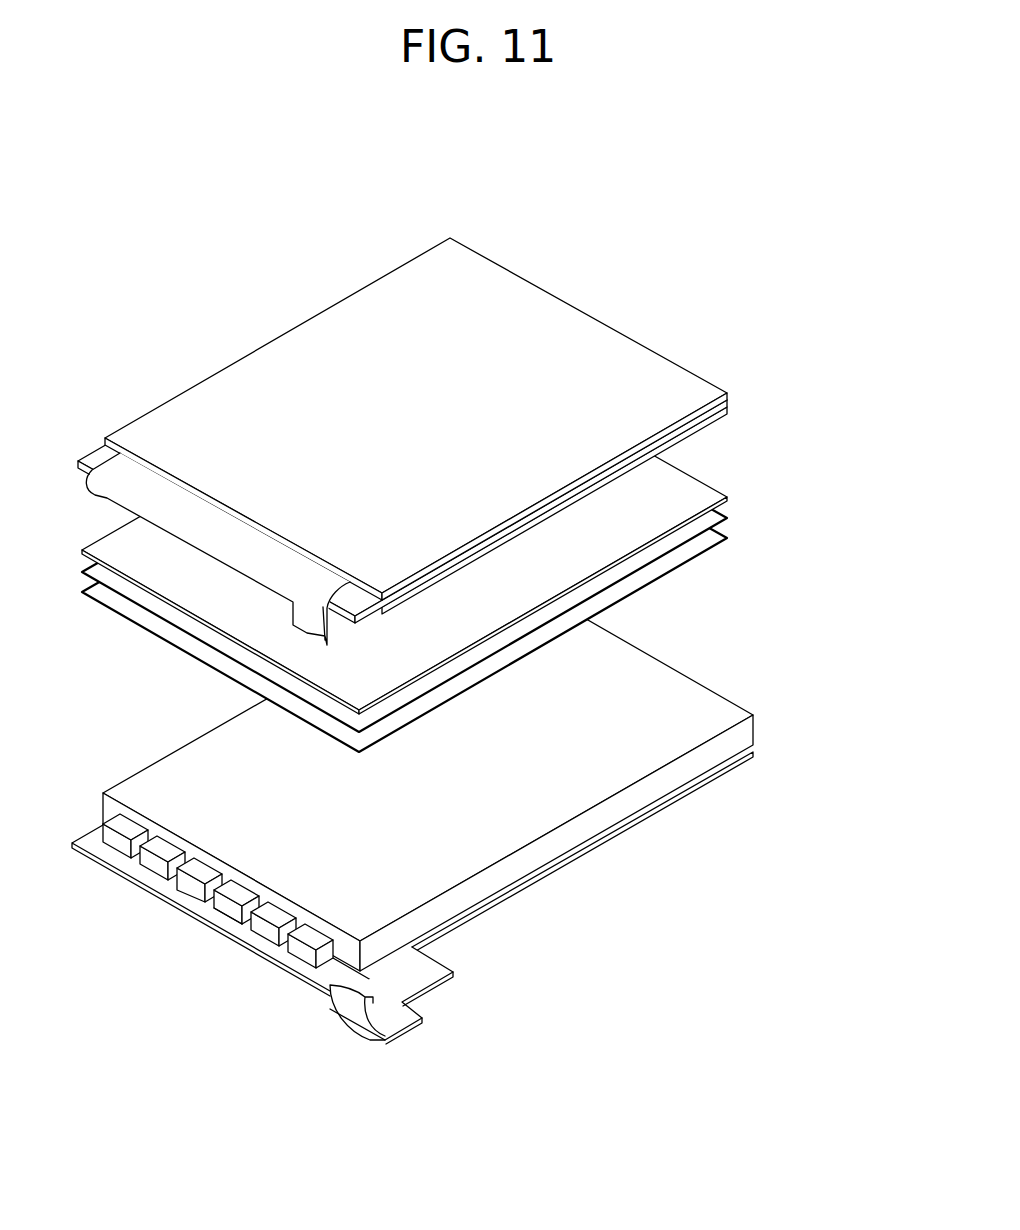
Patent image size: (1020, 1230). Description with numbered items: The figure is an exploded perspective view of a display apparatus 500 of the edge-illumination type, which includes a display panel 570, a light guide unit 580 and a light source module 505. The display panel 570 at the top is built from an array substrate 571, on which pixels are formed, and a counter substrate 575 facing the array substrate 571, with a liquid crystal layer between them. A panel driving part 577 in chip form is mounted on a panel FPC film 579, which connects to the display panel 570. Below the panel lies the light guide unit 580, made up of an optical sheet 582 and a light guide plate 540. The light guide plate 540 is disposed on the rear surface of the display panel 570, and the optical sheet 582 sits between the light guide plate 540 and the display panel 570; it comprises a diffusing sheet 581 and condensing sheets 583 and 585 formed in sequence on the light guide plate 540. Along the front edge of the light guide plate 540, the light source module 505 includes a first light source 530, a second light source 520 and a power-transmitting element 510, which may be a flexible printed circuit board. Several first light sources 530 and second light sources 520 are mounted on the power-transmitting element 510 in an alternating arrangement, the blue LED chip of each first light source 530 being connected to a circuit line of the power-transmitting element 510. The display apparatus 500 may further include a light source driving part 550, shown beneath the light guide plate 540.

The display apparatus 500 is at (469, 197).
The light source module 505 is at (235, 929).
The power-transmitting element 510 is at (247, 945).
The second light source 520 is at (193, 888).
The first light source 530 is at (220, 915).
The light guide plate 540 is at (714, 707).
The light source driving part 550 is at (733, 757).
The display panel 570 is at (452, 441).
The array substrate 571 is at (718, 418).
The counter substrate 575 is at (701, 398).
The panel driving part 577 is at (133, 513).
The panel FPC film 579 is at (100, 495).
The light guide unit 580 is at (477, 691).
The diffusing sheet 581 is at (650, 580).
The optical sheet 582 is at (479, 545).
The condensing sheet 583 is at (650, 557).
The condensing sheet 585 is at (652, 523).